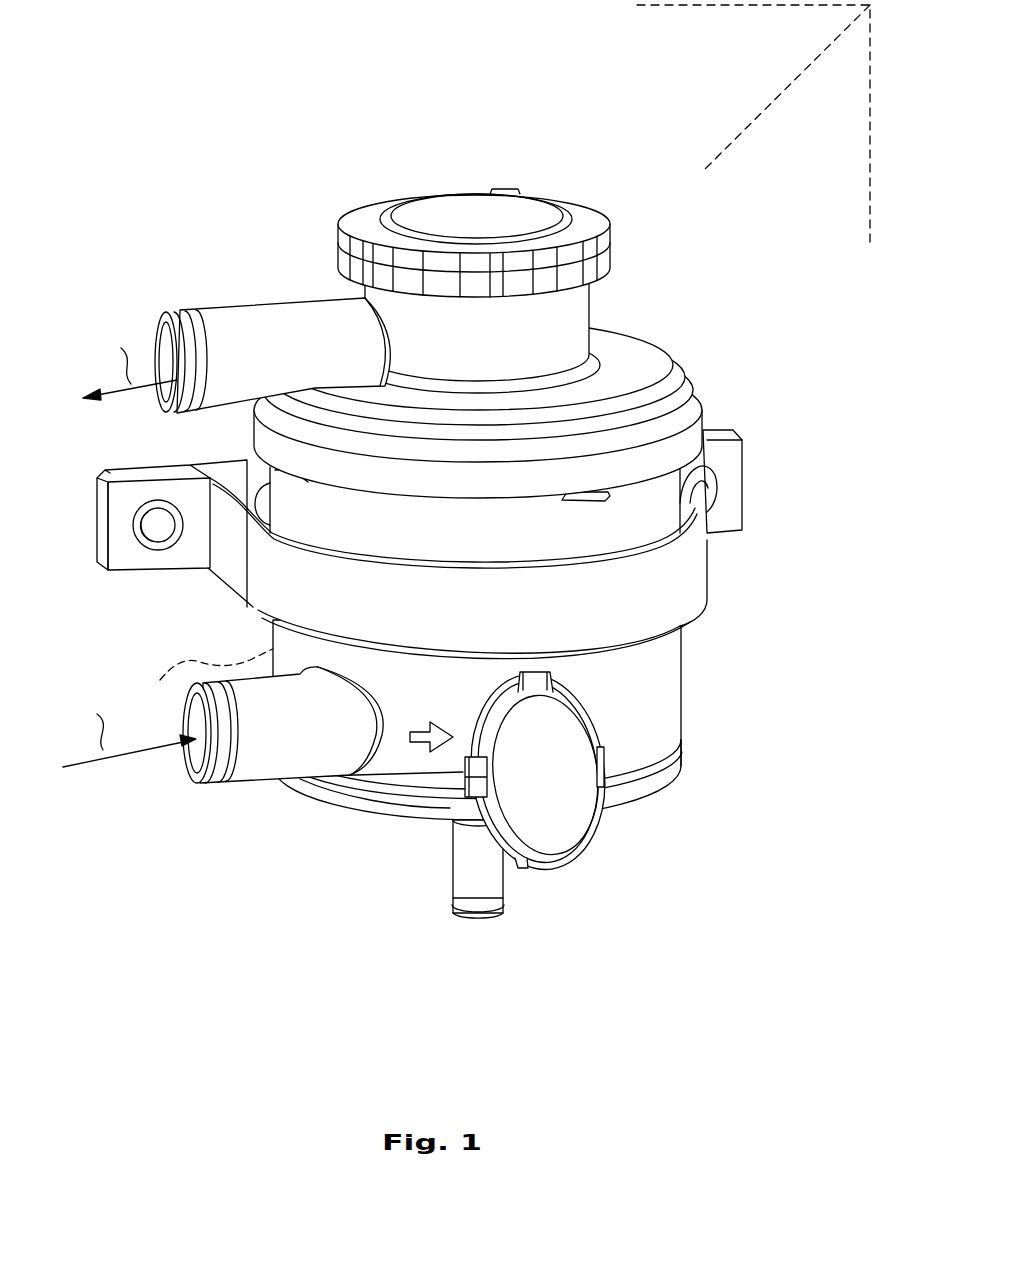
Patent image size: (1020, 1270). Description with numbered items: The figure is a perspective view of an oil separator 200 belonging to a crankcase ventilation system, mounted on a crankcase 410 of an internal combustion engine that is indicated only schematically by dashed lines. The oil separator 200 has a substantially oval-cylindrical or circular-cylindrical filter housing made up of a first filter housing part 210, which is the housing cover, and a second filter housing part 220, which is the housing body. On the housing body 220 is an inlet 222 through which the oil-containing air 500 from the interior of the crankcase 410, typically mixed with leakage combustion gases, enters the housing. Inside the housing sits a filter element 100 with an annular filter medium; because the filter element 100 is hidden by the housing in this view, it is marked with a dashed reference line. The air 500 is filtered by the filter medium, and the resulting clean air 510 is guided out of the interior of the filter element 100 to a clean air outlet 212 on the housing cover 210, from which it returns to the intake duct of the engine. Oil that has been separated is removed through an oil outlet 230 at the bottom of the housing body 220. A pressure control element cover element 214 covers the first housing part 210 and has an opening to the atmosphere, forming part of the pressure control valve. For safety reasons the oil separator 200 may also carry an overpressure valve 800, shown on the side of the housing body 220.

The filter element 100 is at (204, 673).
The oil separator 200 is at (270, 145).
The first filter housing part 210 is at (608, 305).
The clean air outlet 212 is at (299, 378).
The pressure control element cover element 214 is at (490, 231).
The second filter housing part 220 is at (640, 667).
The inlet 222 is at (312, 725).
The oil outlet 230 is at (500, 873).
The crankcase 410 is at (746, 71).
The oil-containing air 500 is at (126, 729).
The clean air 510 is at (128, 363).
The overpressure valve 800 is at (565, 803).